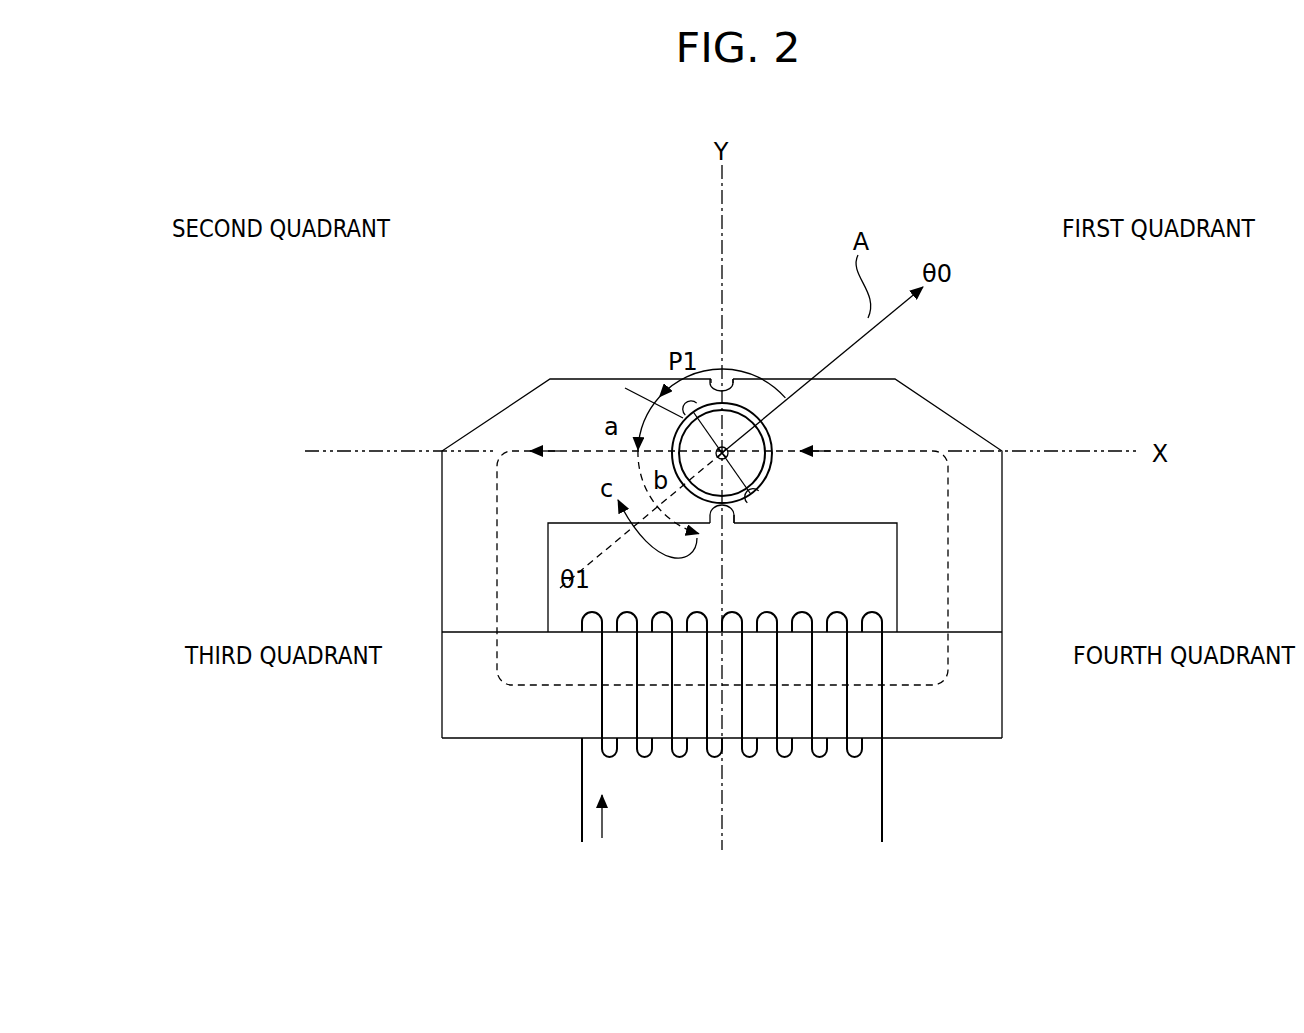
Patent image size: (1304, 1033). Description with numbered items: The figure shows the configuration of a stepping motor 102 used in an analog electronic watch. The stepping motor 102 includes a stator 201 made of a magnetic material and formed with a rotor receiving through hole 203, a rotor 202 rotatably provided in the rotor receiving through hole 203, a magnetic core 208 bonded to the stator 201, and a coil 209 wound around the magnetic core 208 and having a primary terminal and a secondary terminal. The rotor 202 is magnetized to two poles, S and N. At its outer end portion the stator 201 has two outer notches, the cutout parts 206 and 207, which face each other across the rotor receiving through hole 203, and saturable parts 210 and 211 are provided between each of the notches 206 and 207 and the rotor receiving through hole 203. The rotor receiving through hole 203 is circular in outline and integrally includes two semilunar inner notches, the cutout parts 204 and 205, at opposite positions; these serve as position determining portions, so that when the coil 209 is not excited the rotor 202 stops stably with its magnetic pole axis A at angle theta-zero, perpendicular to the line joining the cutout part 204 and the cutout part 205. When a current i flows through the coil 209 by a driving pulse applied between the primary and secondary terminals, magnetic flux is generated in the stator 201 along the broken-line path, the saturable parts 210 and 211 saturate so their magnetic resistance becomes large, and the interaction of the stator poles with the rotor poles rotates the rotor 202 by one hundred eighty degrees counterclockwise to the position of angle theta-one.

The stepping motor 102 is at (478, 388).
The stator 201 is at (978, 523).
The rotor 202 is at (755, 444).
The rotor receiving through hole 203 is at (761, 433).
The cutout part (inner notch) 204 is at (766, 503).
The cutout part (inner notch) 205 is at (684, 404).
The cutout part (outer notch) 206 is at (729, 381).
The cutout part (outer notch) 207 is at (714, 516).
The magnetic core 208 is at (487, 715).
The coil 209 is at (817, 755).
The saturable part 210 is at (714, 384).
The saturable part 211 is at (733, 516).